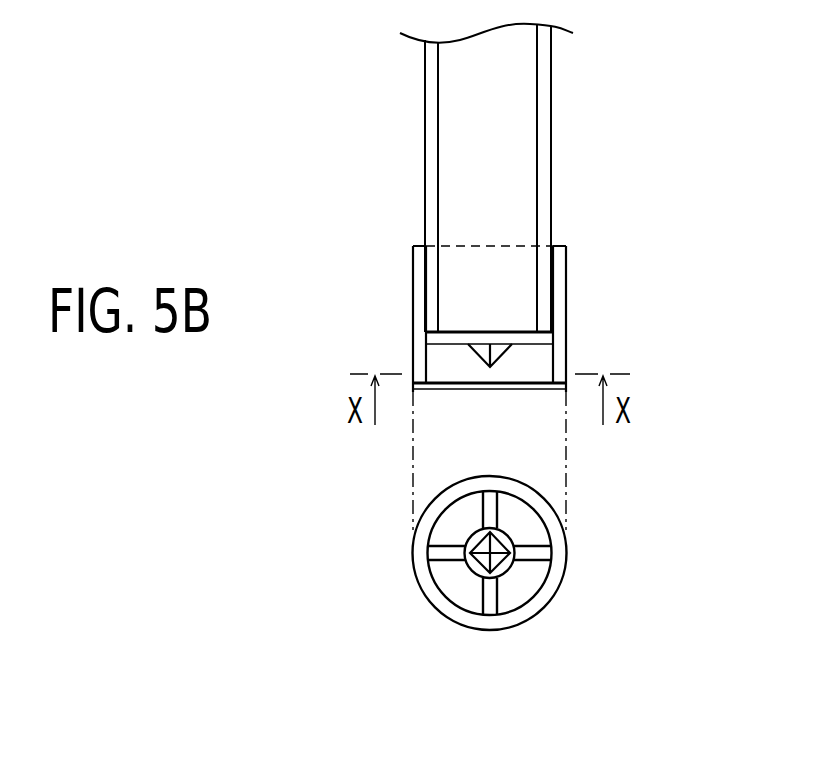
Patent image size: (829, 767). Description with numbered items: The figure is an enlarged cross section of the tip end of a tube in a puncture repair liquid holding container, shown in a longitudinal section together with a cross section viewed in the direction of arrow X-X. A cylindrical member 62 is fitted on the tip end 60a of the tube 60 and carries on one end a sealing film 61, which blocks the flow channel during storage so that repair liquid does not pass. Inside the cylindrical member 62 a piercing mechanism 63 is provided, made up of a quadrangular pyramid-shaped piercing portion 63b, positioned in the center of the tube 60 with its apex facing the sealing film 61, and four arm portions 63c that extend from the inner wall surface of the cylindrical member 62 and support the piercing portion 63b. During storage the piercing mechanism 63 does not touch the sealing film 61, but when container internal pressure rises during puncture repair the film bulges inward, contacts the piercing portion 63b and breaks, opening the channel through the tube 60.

The tube 60 is at (545, 115).
The tip end 60a is at (477, 328).
The sealing film 61 is at (517, 385).
The cylindrical member 62 is at (558, 272).
The piercing mechanism 63 is at (597, 442).
The piercing portion 63b is at (500, 364).
The arm portion 63c is at (510, 338).